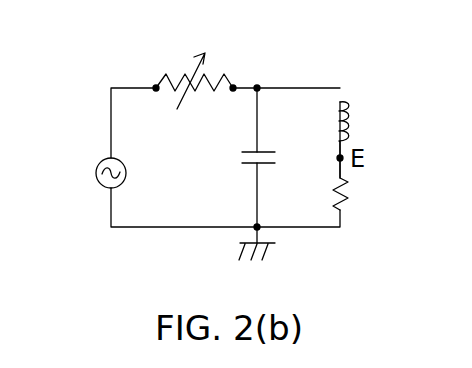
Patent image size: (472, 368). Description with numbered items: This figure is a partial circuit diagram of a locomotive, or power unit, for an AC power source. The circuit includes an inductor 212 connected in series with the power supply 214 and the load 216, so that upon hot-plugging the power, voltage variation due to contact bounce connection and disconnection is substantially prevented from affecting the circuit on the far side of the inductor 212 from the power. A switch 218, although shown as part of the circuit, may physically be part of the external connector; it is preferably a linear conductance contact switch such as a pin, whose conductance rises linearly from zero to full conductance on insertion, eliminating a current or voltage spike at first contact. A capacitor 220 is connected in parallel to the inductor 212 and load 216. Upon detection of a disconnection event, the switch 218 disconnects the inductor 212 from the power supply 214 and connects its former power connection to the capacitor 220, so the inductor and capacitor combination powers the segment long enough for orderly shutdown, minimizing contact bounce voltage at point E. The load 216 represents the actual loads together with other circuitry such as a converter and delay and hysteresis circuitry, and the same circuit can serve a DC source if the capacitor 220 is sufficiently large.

The inductor 212 is at (345, 118).
The power supply 214 is at (93, 174).
The load 216 is at (347, 192).
The switch 218 is at (227, 75).
The capacitor 220 is at (252, 165).